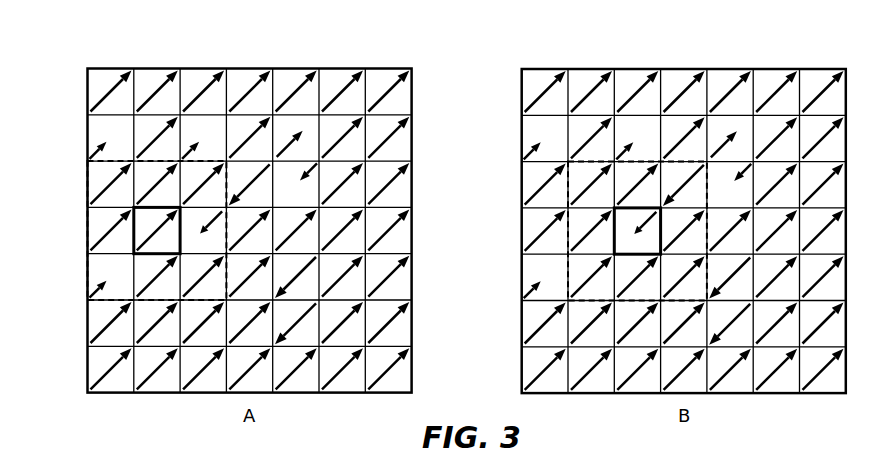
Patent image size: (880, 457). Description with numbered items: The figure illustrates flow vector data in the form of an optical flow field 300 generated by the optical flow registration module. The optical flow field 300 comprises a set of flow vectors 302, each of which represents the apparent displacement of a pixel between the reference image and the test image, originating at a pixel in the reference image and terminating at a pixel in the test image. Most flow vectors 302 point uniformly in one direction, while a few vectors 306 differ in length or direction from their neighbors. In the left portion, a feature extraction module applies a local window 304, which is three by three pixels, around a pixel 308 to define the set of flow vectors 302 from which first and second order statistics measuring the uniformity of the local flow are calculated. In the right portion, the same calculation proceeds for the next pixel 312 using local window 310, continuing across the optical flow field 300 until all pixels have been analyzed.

The optical flow field 300 is at (737, 29).
The flow vector 302 is at (345, 100).
The local window 304 is at (87, 182).
The inconsistent orientation vector 306 is at (350, 142).
The pixel 308 is at (137, 235).
The local window 310 is at (567, 195).
The next pixel 312 is at (625, 240).